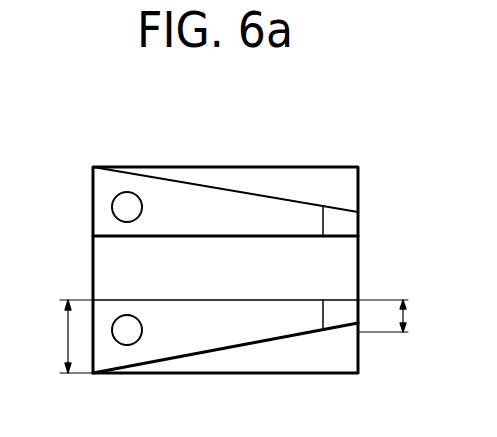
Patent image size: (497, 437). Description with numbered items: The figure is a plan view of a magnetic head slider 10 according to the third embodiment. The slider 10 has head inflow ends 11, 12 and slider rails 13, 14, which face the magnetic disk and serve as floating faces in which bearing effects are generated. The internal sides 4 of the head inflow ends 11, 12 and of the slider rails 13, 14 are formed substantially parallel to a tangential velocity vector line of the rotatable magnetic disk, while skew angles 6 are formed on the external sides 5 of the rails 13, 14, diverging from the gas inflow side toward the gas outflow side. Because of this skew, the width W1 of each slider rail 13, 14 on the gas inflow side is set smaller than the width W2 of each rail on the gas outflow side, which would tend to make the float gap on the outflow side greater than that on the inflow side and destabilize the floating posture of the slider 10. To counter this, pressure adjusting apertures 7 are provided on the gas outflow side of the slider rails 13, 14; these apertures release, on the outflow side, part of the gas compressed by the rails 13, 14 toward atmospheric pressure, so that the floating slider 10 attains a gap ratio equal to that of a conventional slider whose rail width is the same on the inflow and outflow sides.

The internal side 4 is at (138, 300).
The external side 5 is at (236, 190).
The skew angle 6 is at (192, 183).
The pressure adjusting aperture 7 is at (113, 198).
The magnetic head slider 10 is at (350, 255).
The head inflow end 11 is at (337, 312).
The head inflow end 12 is at (343, 225).
The slider rail 13 is at (302, 322).
The slider rail 14 is at (293, 218).
The width of slider rail on gas inflow side W1 is at (404, 320).
The width of slider rail on gas outflow side W2 is at (65, 336).